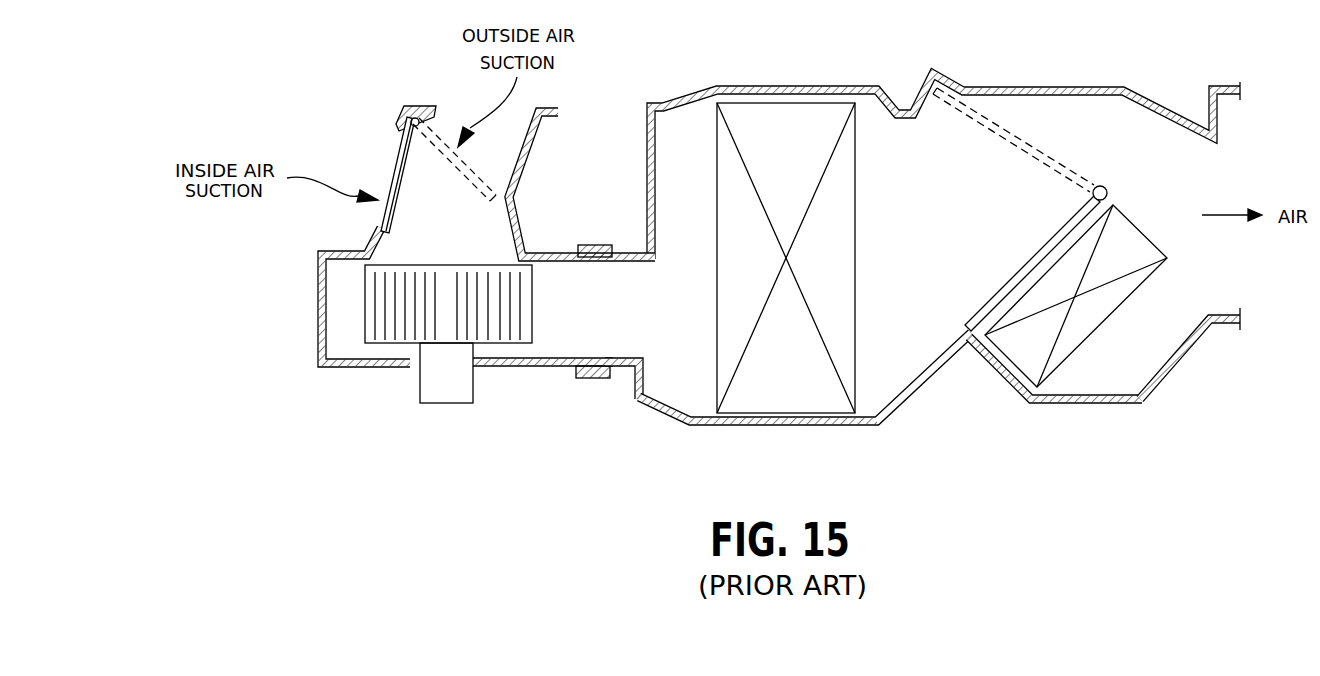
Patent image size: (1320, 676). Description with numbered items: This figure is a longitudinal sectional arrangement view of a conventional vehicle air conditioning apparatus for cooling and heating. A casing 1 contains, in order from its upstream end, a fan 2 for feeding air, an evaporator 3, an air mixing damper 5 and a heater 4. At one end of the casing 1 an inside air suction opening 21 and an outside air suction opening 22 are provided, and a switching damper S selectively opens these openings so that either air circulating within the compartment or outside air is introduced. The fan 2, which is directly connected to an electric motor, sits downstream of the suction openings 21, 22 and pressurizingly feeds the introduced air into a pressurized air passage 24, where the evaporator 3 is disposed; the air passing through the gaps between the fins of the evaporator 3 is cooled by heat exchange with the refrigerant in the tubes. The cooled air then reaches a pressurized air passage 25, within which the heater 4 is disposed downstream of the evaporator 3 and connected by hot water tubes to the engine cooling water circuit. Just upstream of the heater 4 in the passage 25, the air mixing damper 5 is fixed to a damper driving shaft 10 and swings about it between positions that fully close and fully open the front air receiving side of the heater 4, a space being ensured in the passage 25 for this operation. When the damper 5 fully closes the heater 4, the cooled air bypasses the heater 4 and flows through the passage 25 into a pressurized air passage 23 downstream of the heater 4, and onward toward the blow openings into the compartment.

The casing 1 is at (668, 103).
The fan 2 is at (380, 344).
The evaporator 3 is at (690, 418).
The heater 4 is at (1107, 320).
The air mixing damper 5 is at (1002, 345).
The damper driving shaft 10 is at (1108, 191).
The inside air suction opening 21 is at (381, 226).
The outside air suction opening 22 is at (450, 143).
The pressurized air passage 23 is at (1187, 277).
The pressurized air passage 24 is at (667, 327).
The pressurized air passage 25 is at (985, 163).
The damper plate S is at (400, 158).